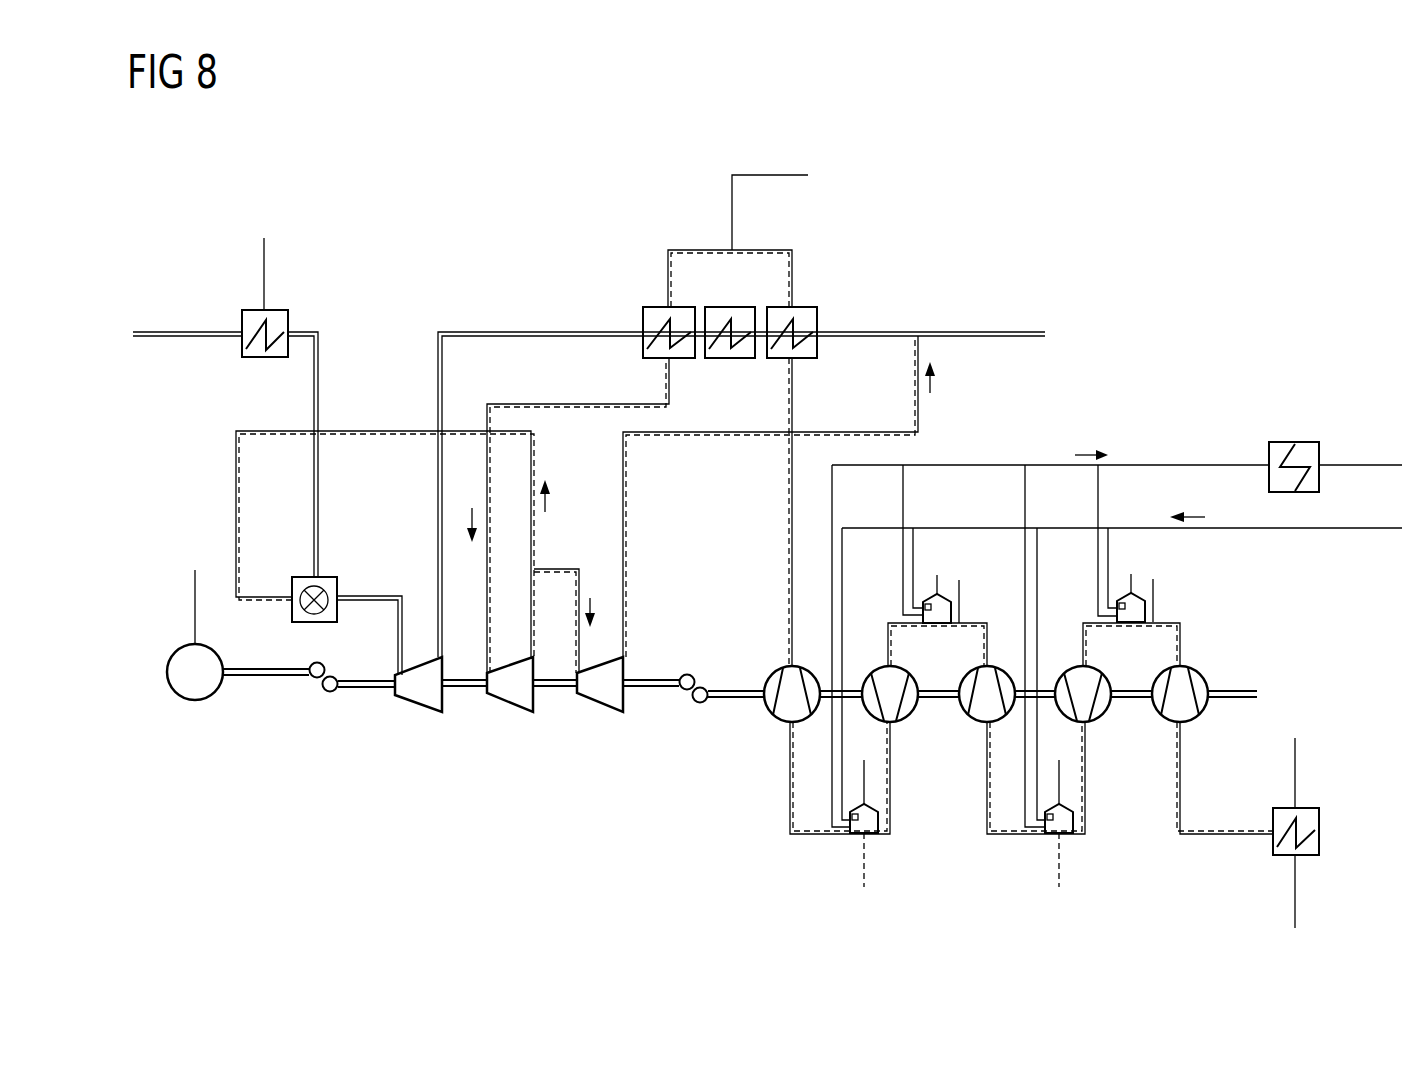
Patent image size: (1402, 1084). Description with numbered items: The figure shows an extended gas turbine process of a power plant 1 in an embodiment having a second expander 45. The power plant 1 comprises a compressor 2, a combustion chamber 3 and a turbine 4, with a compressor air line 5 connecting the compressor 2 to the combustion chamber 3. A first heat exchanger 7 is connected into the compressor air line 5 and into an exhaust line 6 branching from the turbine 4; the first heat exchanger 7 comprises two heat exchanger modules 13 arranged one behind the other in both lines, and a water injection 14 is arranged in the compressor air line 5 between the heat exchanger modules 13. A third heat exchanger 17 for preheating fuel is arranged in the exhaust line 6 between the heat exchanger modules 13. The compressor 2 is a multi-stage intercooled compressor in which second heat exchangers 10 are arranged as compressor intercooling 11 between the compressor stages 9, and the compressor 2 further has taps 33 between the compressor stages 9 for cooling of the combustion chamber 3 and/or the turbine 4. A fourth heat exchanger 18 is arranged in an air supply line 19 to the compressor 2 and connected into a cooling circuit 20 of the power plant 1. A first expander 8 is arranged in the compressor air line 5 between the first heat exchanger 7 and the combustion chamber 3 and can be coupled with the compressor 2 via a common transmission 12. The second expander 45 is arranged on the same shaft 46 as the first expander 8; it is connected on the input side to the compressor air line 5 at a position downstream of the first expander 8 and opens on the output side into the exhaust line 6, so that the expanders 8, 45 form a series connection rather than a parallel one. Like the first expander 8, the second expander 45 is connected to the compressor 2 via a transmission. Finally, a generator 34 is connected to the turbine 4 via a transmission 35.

The power plant 1 is at (860, 124).
The compressor 2 is at (1203, 882).
The combustion chamber 3 is at (325, 577).
The turbine 4 is at (418, 700).
The compressor air line 5 is at (372, 428).
The exhaust line 6 is at (482, 327).
The first heat exchanger 7 is at (657, 307).
The first expander 8 is at (510, 705).
The compressor stages 9 is at (775, 723).
The second heat exchangers 10 is at (1028, 663).
The compressor intercooling 11 is at (937, 594).
The common transmission 12 is at (685, 705).
The heat exchanger modules 13 is at (750, 527).
The water injection 14 is at (775, 175).
The third heat exchanger 17 is at (738, 362).
The fourth heat exchanger 18 is at (1320, 838).
The air supply line 19 is at (1228, 830).
The cooling circuit 20 is at (1296, 890).
The taps 33 is at (962, 590).
The generator 34 is at (190, 700).
The transmission 35 is at (318, 680).
The second expander 45 is at (598, 705).
The shaft 46 is at (463, 698).